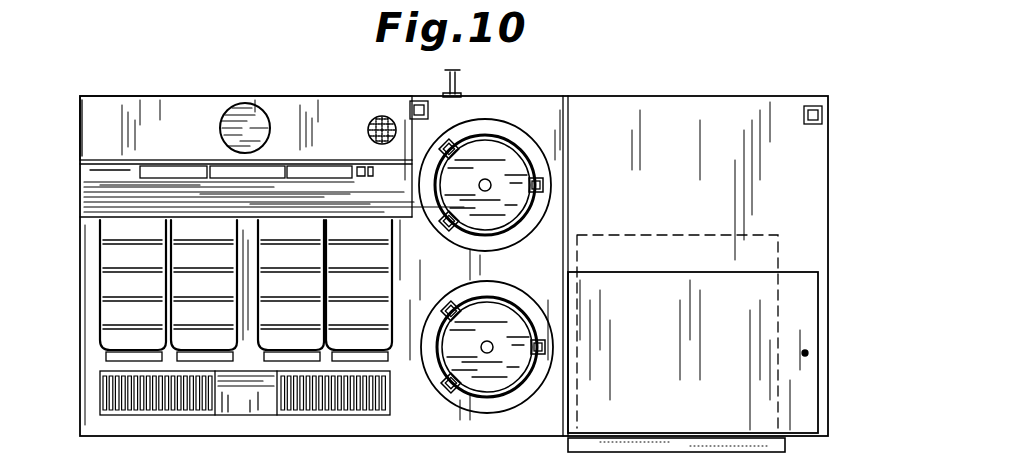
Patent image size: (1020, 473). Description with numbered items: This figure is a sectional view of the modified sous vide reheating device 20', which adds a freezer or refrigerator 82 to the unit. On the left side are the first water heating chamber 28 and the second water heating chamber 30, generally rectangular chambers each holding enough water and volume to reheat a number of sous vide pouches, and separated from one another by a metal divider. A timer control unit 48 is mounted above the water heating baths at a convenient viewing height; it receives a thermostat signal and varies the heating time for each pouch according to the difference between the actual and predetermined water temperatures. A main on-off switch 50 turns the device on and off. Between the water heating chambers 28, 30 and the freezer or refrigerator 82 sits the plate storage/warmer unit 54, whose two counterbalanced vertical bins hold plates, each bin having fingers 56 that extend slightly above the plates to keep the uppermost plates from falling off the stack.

The modified embodiment of the sous vide reheating device 20' is at (454, 249).
The first water heating chamber 28 is at (118, 285).
The second water heating chamber 30 is at (377, 318).
The timer control unit 48 is at (325, 166).
The main on-off switch 50 is at (362, 167).
The plate storage/warmer unit 54 is at (535, 145).
The fingers 56 is at (452, 134).
The freezer or refrigerator 82 is at (788, 447).